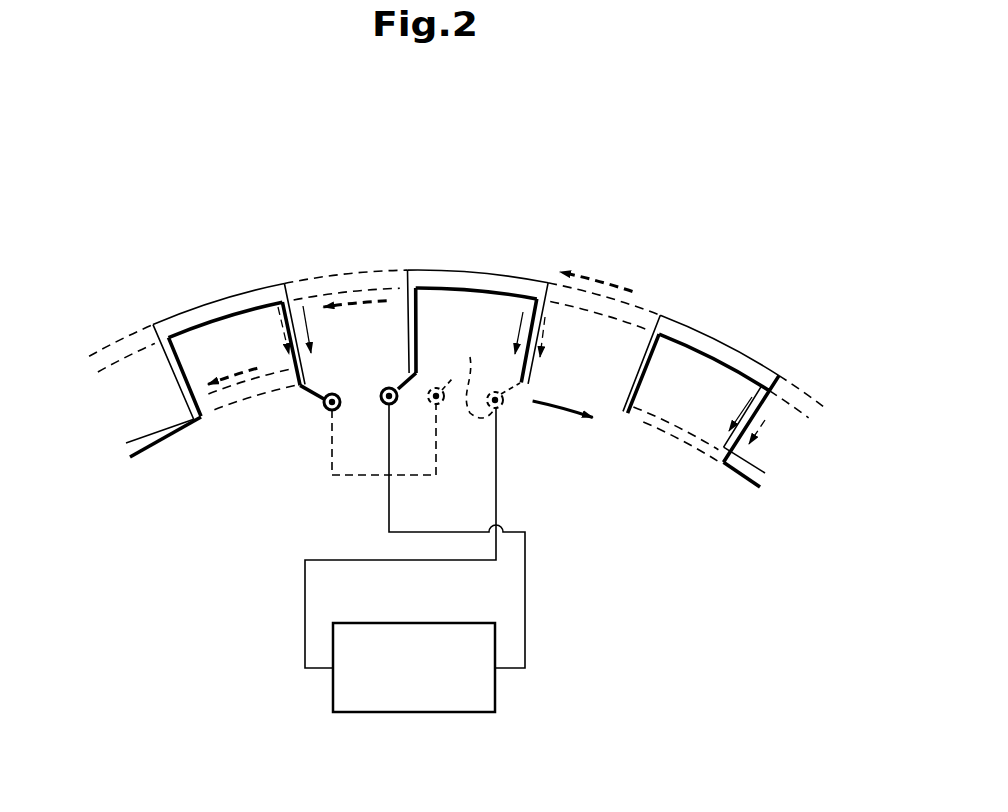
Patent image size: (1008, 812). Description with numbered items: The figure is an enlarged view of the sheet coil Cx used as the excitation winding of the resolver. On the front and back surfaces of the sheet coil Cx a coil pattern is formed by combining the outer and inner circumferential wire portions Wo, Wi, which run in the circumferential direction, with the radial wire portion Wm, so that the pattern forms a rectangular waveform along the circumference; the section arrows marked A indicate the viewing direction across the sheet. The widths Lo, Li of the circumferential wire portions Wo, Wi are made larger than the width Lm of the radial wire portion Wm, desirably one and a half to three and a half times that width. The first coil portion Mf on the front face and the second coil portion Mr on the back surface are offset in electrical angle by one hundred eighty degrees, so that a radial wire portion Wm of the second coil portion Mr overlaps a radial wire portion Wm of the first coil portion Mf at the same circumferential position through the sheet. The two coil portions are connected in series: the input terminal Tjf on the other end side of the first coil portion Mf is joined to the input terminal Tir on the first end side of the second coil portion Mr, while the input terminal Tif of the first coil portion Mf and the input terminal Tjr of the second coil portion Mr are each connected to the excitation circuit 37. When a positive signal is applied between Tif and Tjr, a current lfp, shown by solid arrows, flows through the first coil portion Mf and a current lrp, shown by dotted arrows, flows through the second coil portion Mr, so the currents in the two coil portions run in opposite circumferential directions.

The width of circumferential wire portion Wo Lo is at (187, 360).
The width of circumferential wire portion Wi Li is at (145, 397).
The width of radial wire portion Wm Lm is at (450, 340).
The second coil portion Mr is at (352, 266).
The first coil portion Mf is at (458, 265).
The radial wire portion Wm is at (550, 298).
The circumferential wire portion (outer) Wo is at (643, 300).
The circumferential wire portion (inner) Wi is at (610, 412).
The current Ifp lfp is at (522, 337).
The current Irp lrp is at (600, 277).
The sheet coil Cx is at (500, 240).
The direction A is at (270, 335).
The input terminal on the other end side of the first coil portion Tjf is at (322, 408).
The input terminal on the one end side of the first coil portion Tif is at (381, 401).
The input terminal on the other end side of the second coil portion Tjr is at (412, 506).
The input terminal on the first end side of the second coil portion Tir is at (460, 395).
The excitation circuit 37 is at (495, 692).